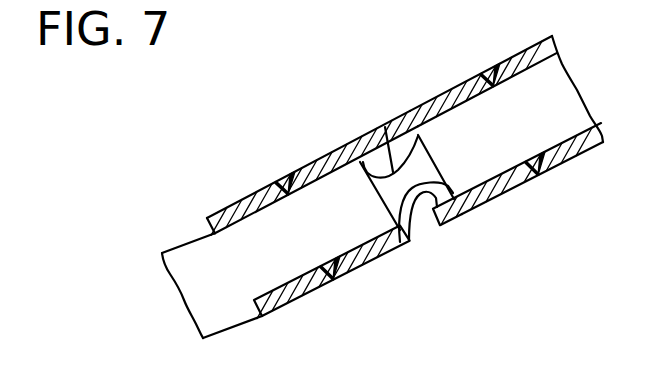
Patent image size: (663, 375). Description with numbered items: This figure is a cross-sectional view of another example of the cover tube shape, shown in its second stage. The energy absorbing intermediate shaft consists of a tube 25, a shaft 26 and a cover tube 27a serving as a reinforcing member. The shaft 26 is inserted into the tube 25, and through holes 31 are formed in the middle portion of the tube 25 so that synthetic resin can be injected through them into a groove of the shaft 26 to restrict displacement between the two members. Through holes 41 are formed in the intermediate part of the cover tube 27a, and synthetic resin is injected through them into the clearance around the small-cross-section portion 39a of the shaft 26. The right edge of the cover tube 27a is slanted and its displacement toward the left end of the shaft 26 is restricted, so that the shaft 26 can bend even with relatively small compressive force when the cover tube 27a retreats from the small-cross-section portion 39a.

The tube 25 is at (437, 97).
The shaft 26 is at (171, 246).
The cover tube 27a is at (312, 162).
The through holes 31 is at (486, 76).
The small-cross-section portion 39a is at (402, 189).
The through holes 41 is at (277, 184).